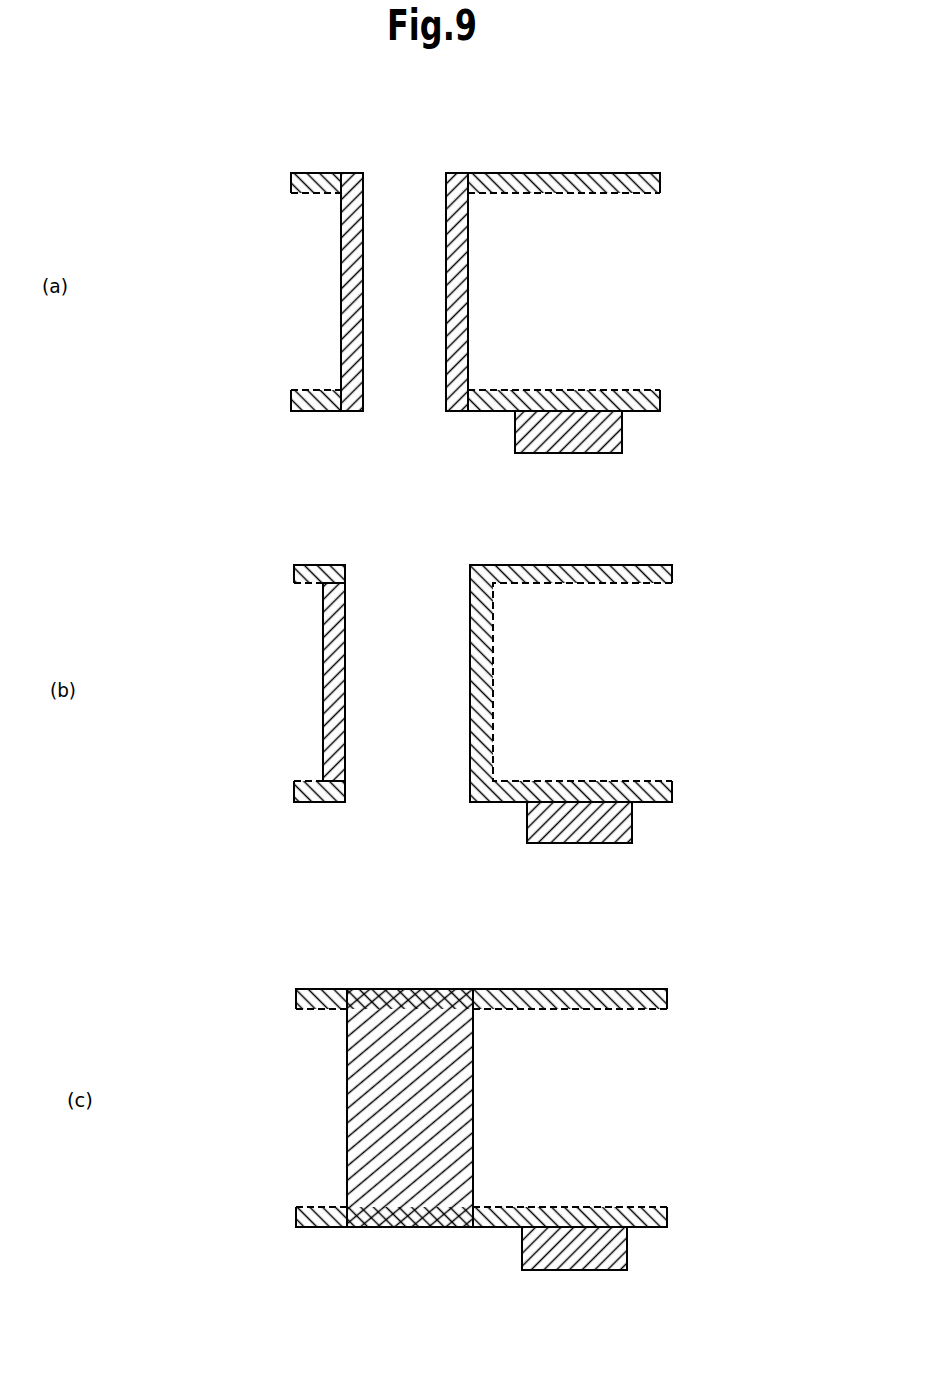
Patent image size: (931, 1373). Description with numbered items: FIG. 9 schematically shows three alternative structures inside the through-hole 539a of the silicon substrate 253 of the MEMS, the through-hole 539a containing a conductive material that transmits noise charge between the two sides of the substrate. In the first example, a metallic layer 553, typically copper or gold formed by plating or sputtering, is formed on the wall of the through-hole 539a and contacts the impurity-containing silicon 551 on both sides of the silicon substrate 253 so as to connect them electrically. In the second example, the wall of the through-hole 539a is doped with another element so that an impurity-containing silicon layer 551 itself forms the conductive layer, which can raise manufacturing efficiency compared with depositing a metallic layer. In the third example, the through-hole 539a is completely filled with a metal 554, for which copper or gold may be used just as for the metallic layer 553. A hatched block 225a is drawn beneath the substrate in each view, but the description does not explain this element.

The silicon substrate 253 is at (496, 700).
The impurity-containing silicon layer 551 is at (550, 193).
The metallic layer 553 is at (446, 207).
The through-hole 539a is at (345, 618).
The metal 554 is at (408, 989).
The projection 225a is at (622, 432).